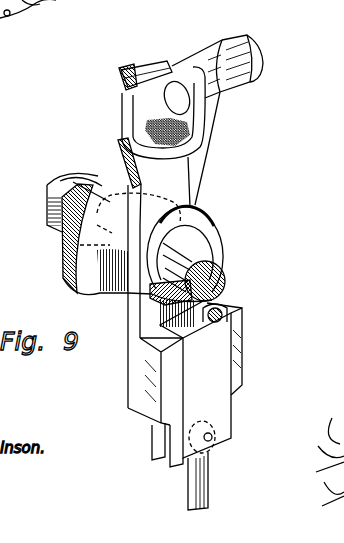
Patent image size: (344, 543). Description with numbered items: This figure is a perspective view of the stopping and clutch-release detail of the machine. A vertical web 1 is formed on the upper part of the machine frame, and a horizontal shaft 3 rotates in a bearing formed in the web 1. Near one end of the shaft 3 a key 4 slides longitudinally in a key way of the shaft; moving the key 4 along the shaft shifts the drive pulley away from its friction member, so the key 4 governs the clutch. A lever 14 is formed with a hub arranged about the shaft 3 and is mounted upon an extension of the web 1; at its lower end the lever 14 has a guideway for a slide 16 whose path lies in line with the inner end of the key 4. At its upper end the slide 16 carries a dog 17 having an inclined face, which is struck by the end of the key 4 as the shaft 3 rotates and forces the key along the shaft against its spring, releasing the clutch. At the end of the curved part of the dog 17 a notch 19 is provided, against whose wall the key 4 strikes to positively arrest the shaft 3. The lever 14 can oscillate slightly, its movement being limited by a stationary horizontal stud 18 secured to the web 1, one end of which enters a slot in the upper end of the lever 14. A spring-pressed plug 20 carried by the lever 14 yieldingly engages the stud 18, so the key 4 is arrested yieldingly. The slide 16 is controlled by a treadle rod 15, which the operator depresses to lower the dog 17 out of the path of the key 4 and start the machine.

The vertical web 1 is at (130, 234).
The horizontal shaft 3 is at (58, 178).
The key 4 is at (172, 285).
The lever 14 is at (112, 258).
The treadle rod 15 is at (210, 469).
The slide 16 is at (223, 402).
The dog 17 is at (222, 307).
The stationary horizontal stud 18 is at (141, 68).
The notch 19 is at (218, 322).
The plug 20 is at (165, 82).